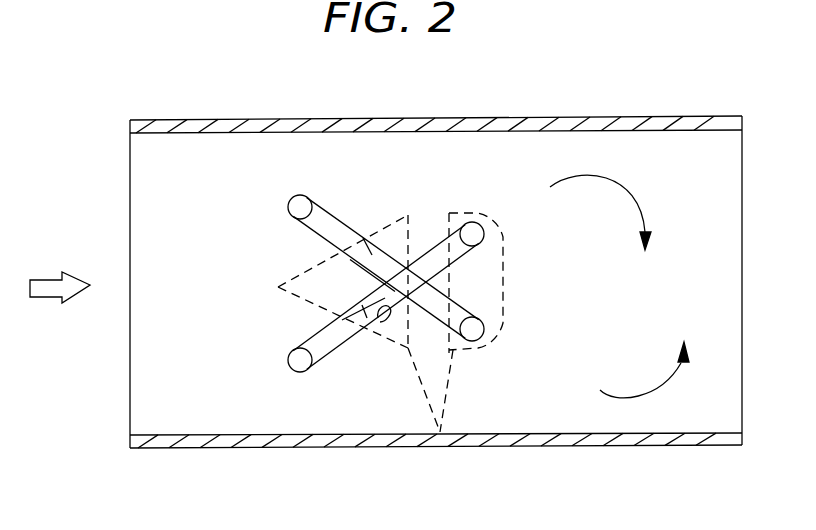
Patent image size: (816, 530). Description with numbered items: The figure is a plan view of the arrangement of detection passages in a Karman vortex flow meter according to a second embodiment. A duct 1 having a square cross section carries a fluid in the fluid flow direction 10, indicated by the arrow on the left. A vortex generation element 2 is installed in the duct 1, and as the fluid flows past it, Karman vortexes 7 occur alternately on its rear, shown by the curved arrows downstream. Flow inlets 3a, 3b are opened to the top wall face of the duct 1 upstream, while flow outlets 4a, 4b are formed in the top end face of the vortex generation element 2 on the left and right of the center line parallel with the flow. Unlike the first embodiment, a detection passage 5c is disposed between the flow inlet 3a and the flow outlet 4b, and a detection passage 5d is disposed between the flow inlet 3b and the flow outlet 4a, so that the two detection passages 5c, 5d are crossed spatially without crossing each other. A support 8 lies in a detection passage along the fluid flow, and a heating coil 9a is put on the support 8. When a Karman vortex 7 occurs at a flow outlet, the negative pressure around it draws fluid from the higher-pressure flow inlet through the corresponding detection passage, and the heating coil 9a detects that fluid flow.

The duct 1 is at (703, 116).
The vortex generation element 2 is at (440, 433).
The flow inlet 3a is at (288, 361).
The flow inlet 3b is at (287, 209).
The flow outlet 4a is at (484, 330).
The flow outlet 4b is at (484, 233).
The detection passage 5c is at (323, 358).
The detection passage 5d is at (331, 209).
The Karman vortex 7 is at (610, 178).
The support 8 is at (380, 310).
The heating coil 9a is at (365, 320).
The fluid flow direction 10 is at (50, 298).